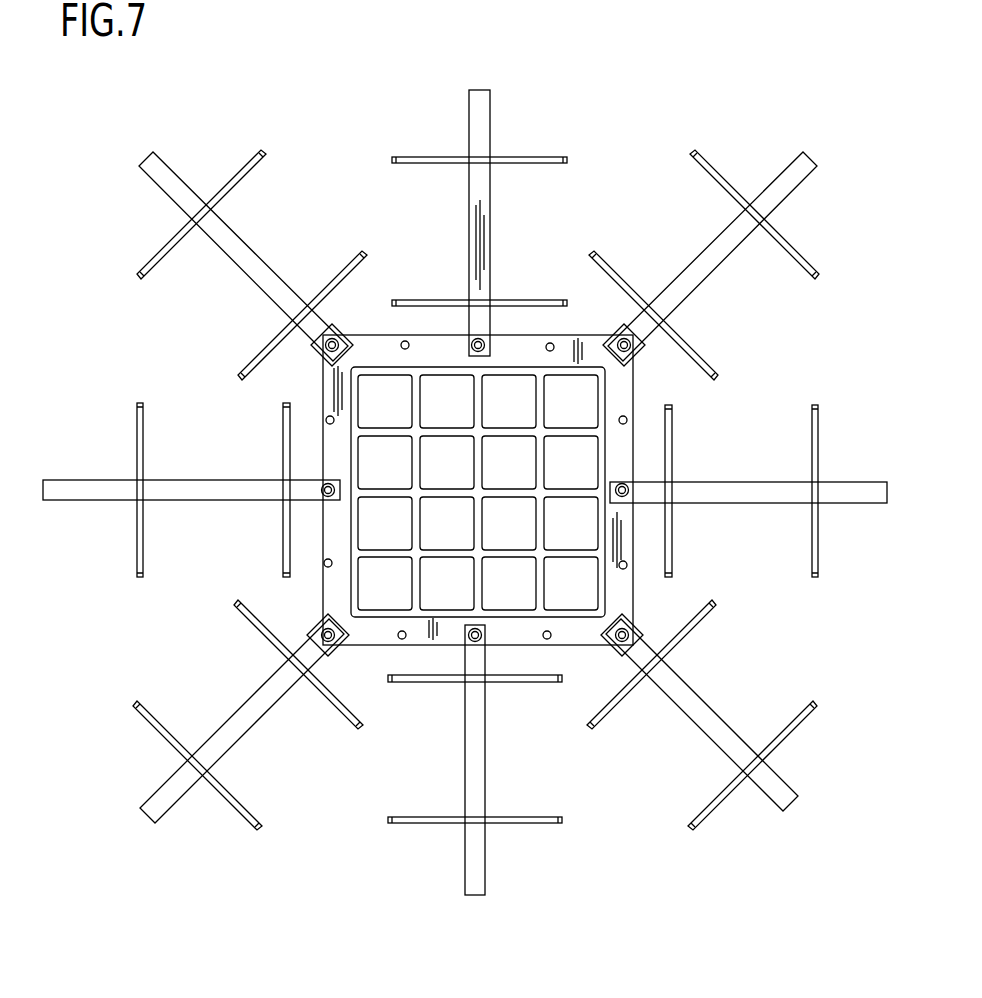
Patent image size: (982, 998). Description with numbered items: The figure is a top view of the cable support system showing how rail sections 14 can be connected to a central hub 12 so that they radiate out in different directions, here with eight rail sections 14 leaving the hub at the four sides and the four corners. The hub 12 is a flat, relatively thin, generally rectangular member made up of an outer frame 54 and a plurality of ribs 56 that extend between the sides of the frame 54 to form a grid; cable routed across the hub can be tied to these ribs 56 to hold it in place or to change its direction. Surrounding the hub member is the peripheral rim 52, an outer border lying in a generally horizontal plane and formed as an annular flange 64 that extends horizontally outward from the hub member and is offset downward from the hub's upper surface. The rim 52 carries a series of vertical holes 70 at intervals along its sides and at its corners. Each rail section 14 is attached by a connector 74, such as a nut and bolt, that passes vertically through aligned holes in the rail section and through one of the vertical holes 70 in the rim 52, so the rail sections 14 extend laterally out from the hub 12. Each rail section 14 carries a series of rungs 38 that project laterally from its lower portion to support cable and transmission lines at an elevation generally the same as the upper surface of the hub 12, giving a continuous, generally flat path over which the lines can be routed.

The hub 12 is at (535, 490).
The rail section 14 is at (489, 262).
The rung 38 is at (241, 172).
The peripheral rim 52 is at (632, 545).
The outer frame 54 is at (605, 396).
The rib 56 is at (400, 424).
The annular flange 64 is at (345, 640).
The vertical hole 70 is at (404, 338).
The connector 74 is at (330, 338).